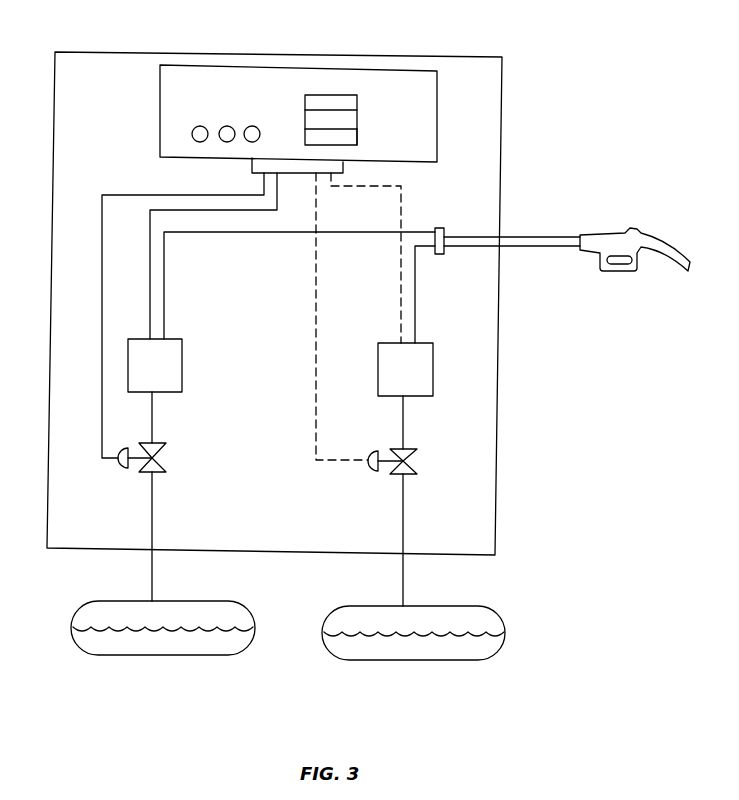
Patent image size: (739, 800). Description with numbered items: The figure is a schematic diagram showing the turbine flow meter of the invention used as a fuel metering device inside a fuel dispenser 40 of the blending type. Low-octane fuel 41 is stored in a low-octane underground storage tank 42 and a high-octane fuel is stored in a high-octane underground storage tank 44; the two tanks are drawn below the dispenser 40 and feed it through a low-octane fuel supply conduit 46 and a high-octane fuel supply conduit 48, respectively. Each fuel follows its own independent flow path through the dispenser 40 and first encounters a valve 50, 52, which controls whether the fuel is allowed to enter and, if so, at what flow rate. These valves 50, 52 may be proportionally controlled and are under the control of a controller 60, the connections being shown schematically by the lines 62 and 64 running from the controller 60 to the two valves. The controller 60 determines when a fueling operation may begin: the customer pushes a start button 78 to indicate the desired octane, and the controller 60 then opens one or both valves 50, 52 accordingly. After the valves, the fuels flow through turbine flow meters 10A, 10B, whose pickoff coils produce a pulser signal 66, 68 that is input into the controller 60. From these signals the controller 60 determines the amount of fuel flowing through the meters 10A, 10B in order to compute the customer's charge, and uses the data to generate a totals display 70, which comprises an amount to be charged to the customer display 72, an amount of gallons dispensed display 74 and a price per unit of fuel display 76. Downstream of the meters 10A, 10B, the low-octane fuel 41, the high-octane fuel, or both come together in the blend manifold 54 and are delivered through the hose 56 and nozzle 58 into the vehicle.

The fuel dispenser 40 is at (456, 57).
The controller 60 is at (437, 116).
The start button 78 is at (193, 128).
The totals display 70 is at (318, 95).
The amount to be charged to the customer display 72 is at (357, 98).
The amount of gallons dispensed display 74 is at (357, 122).
The price per unit of fuel display 76 is at (357, 140).
The control line to first valve 62 is at (132, 195).
The pulser signal 66 is at (150, 246).
The control line to second valve 64 is at (315, 440).
The pulser signal 68 is at (405, 206).
The turbine flow meter 10A is at (172, 340).
The turbine flow meter 10B is at (425, 343).
The valve 50 is at (160, 445).
The valve 52 is at (415, 450).
The blend manifold 54 is at (441, 228).
The hose 56 is at (534, 237).
The nozzle 58 is at (678, 256).
The low-octane fuel supply conduit 46 is at (148, 590).
The high-octane fuel supply conduit 48 is at (398, 594).
The low-octane underground storage tank 42 is at (73, 620).
The high-octane underground storage tank 44 is at (508, 628).
The low-octane fuel 41 is at (155, 648).